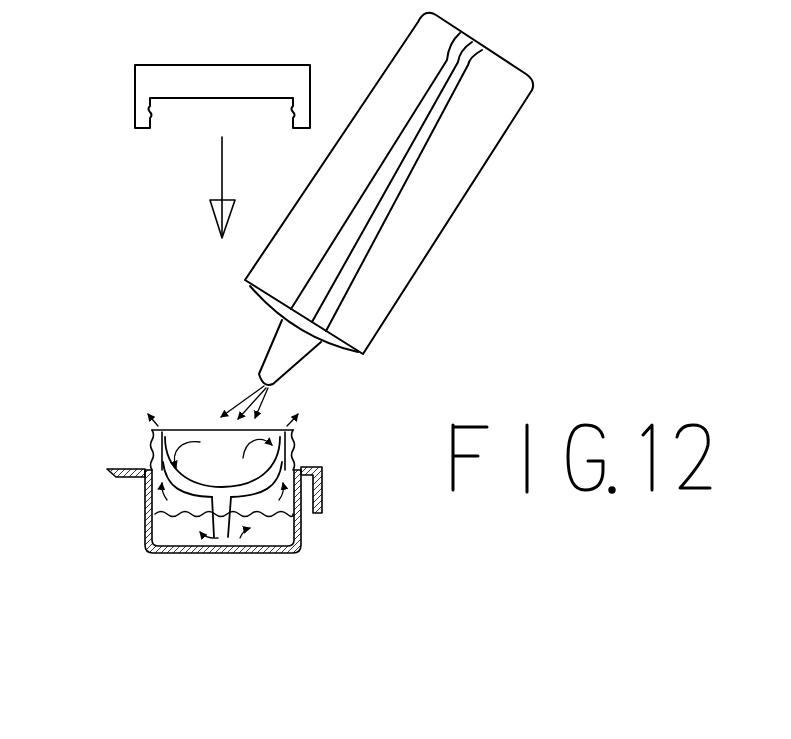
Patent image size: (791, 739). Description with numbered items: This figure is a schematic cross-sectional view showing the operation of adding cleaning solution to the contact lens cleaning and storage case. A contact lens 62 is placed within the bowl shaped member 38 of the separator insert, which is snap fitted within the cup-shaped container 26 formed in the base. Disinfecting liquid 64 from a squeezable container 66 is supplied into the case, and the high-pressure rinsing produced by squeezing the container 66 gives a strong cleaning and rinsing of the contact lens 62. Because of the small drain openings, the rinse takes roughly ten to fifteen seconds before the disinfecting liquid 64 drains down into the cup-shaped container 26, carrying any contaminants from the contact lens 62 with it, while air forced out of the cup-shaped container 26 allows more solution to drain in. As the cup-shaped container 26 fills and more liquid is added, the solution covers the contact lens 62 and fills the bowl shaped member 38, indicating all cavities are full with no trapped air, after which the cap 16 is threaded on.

The cap 16 is at (200, 58).
The container 66 is at (443, 247).
The disinfecting liquid 64 is at (227, 394).
The contact lens 62 is at (218, 481).
The cup-shaped container 26 is at (141, 537).
The bowl shaped member 38 is at (192, 490).